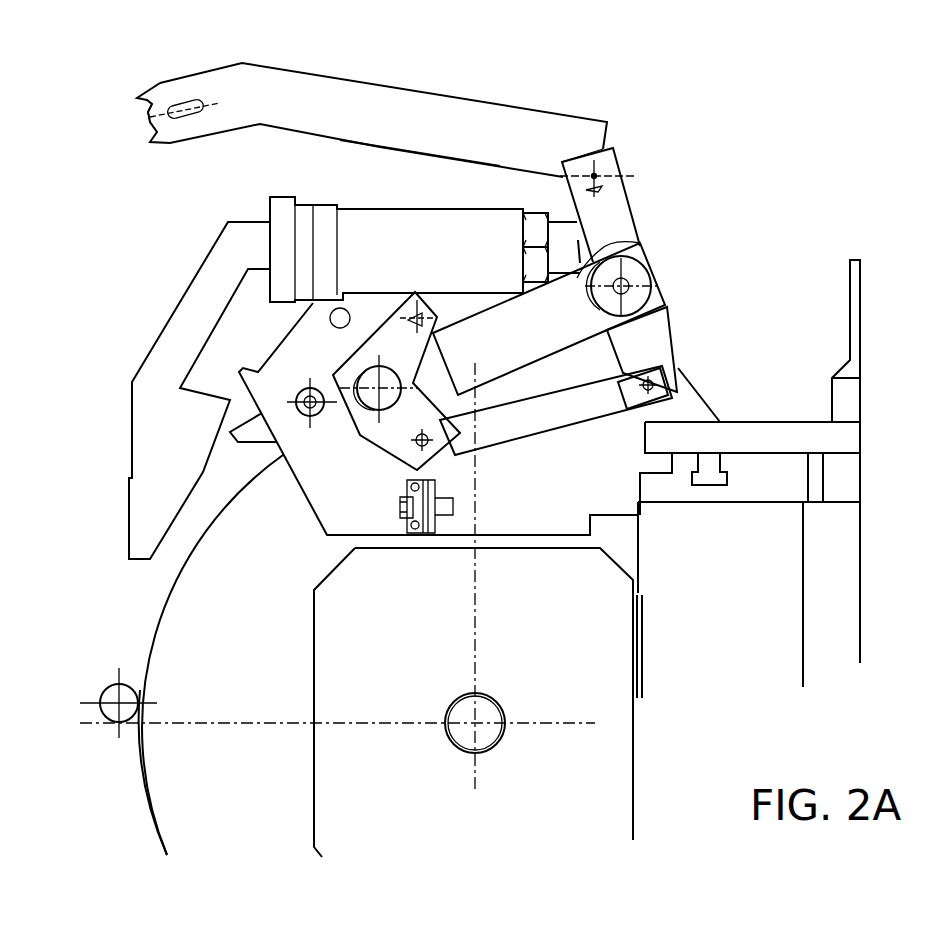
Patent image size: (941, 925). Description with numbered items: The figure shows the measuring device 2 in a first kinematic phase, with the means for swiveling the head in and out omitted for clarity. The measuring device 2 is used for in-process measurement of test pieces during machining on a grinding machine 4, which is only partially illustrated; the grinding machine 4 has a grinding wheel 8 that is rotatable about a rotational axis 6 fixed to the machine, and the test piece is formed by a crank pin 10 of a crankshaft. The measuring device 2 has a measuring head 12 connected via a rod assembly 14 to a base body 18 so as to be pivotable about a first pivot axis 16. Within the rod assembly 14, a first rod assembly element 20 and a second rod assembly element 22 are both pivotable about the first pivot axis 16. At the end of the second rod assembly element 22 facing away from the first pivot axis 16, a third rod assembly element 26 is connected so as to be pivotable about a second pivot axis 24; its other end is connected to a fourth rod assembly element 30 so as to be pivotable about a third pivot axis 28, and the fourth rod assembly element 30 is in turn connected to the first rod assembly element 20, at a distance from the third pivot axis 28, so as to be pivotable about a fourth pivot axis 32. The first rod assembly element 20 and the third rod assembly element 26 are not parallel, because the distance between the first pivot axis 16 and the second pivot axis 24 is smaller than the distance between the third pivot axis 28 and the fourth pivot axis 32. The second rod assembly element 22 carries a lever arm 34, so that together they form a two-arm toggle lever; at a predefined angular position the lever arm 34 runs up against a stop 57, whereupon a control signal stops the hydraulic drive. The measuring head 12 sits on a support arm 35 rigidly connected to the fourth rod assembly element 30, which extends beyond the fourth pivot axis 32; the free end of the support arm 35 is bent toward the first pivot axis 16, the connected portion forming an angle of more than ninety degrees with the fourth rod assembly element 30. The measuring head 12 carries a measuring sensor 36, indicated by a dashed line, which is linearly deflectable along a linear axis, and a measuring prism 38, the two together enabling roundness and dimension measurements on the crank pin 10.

The measuring device 2 is at (645, 140).
The grinding machine 4 is at (137, 796).
The rotational axis 6 is at (476, 723).
The grinding wheel 8 is at (157, 618).
The crank pin 10 is at (102, 695).
The measuring head 12 is at (170, 76).
The rod assembly 14 is at (656, 200).
The first pivot axis 16 is at (350, 372).
The base body 18 is at (282, 368).
The first rod assembly element 20 is at (577, 278).
The second rod assembly element 22 is at (395, 430).
The second pivot axis 24 is at (427, 447).
The third rod assembly element 26 is at (562, 405).
The third pivot axis 28 is at (672, 370).
The fourth rod assembly element 30 is at (648, 337).
The fourth pivot axis 32 is at (628, 287).
The lever arm 34 is at (388, 320).
The support arm 35 is at (355, 98).
The measuring sensor 36 is at (214, 100).
The measuring prism 38 is at (145, 115).
The stop 57 is at (300, 425).